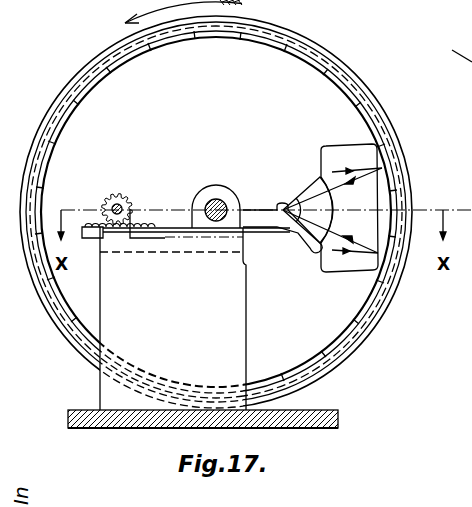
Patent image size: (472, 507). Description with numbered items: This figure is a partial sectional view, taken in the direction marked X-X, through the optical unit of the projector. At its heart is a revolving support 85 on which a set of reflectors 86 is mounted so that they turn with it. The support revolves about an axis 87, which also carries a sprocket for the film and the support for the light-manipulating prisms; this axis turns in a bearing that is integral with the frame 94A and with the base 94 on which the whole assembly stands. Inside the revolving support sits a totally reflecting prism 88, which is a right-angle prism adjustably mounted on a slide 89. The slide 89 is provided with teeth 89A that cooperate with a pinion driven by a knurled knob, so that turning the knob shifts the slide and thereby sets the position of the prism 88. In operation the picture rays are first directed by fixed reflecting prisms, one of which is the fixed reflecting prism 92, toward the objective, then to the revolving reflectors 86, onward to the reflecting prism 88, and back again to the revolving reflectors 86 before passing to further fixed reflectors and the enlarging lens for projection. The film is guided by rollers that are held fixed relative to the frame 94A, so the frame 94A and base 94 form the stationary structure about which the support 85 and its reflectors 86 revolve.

The revolving support 85 is at (356, 82).
The reflectors 86 is at (388, 155).
The axis 87 is at (222, 202).
The totally reflecting prism 88 is at (310, 188).
The slide 89 is at (268, 234).
The teeth 89A is at (86, 222).
The fixed reflecting prism 92 is at (339, 147).
The base 94 is at (301, 411).
The frame 94A is at (240, 303).